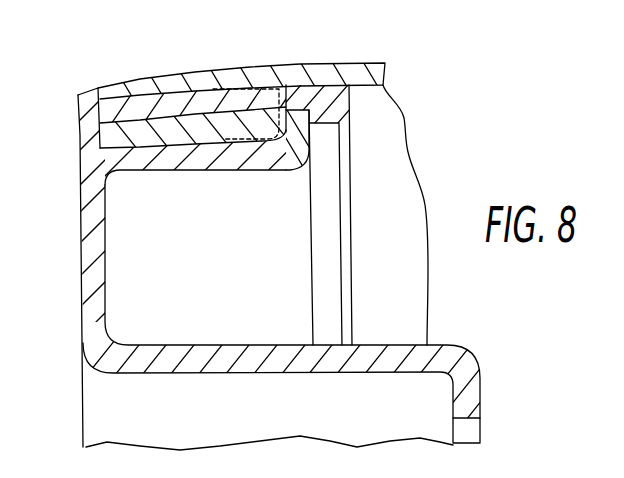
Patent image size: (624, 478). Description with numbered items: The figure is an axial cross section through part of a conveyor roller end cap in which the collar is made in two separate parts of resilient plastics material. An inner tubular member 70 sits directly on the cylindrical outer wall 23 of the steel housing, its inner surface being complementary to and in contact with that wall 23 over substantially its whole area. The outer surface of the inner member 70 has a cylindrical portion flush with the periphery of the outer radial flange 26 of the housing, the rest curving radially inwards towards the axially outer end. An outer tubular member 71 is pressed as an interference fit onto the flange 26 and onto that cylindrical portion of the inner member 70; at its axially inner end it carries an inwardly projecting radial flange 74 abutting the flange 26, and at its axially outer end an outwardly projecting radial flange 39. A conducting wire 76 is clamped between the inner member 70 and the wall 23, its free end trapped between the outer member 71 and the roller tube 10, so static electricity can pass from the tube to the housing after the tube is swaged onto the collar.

The outer band 10 is at (197, 65).
The cylindrical outer wall 23 is at (212, 148).
The outer radial flange 26 is at (295, 130).
The outwardly projecting radial flange 39 is at (80, 93).
The inner tubular member 70 is at (157, 150).
The outer tubular member 71 is at (148, 97).
The inwardly projecting radial flange 74 is at (353, 117).
The wire 76 is at (242, 150).